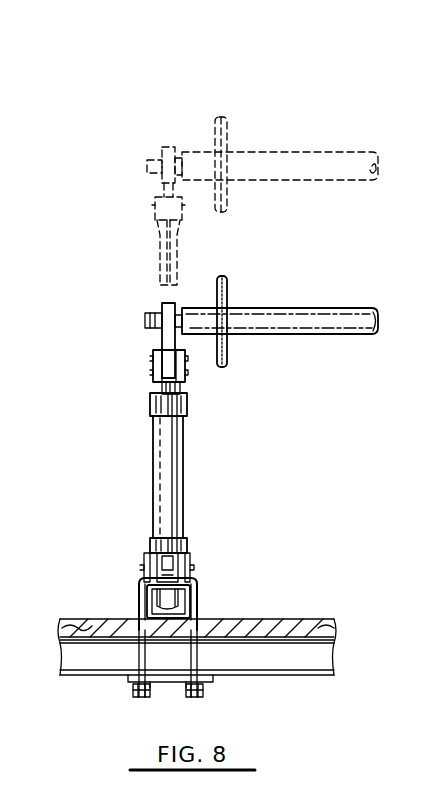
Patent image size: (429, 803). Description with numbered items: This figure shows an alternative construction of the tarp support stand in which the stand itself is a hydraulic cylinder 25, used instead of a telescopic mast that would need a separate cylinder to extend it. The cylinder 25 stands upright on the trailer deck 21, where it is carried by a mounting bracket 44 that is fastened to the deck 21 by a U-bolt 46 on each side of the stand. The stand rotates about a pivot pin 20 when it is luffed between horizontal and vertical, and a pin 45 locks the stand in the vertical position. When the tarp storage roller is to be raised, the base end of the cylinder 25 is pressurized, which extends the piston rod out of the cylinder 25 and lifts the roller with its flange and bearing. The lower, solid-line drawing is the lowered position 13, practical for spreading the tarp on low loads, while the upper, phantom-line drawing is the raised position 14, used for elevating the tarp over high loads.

The low position 13 is at (330, 266).
The high position 14 is at (312, 110).
The pivot pin 20 is at (143, 568).
The trailer deck 21 is at (238, 622).
The cylinder 25 is at (165, 475).
The mounting bracket 44 is at (195, 575).
The pin 45 is at (147, 604).
The U-bolt 46 is at (140, 660).